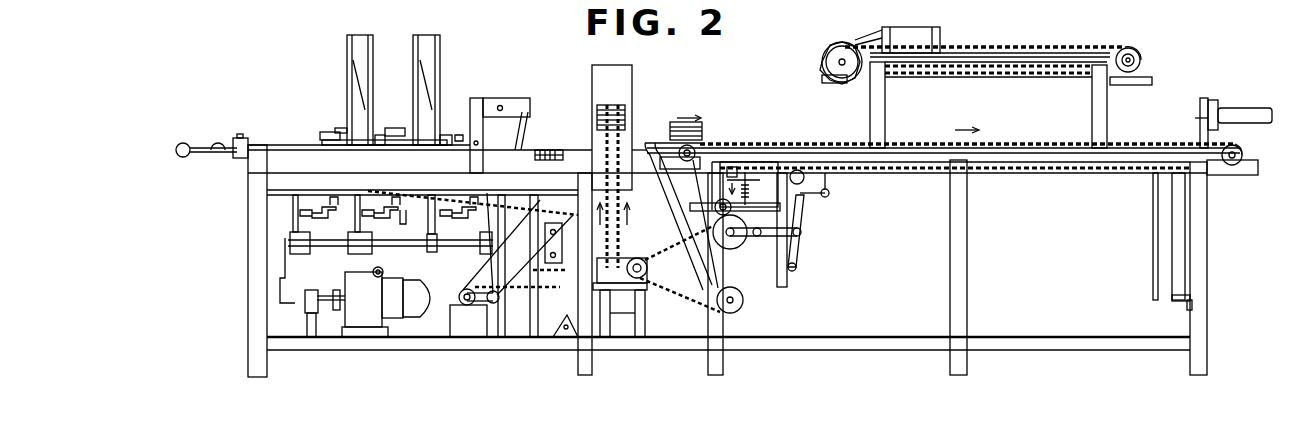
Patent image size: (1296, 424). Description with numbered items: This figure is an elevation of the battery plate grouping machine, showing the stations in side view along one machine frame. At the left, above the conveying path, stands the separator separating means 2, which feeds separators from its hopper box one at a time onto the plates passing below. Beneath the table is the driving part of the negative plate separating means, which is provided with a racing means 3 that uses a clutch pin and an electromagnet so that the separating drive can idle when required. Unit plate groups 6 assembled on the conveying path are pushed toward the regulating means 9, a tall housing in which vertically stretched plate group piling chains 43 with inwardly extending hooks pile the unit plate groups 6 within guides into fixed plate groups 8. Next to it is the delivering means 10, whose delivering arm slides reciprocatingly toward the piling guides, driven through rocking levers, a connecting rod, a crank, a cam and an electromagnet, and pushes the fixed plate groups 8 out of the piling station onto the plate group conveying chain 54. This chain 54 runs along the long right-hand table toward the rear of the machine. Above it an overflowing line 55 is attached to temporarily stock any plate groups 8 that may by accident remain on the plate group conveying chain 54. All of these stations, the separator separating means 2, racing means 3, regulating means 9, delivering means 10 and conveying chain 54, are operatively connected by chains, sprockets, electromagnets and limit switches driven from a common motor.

The separator separating means 2 is at (373, 112).
The racing means 3 is at (308, 227).
The unit plate groups 6 is at (548, 150).
The fixed plate groups 8 is at (625, 110).
The regulating means 9 is at (632, 68).
The delivering means 10 is at (712, 143).
The plate group piling chains 43 is at (620, 205).
The plate group conveying chain 54 is at (912, 143).
The overflowing line 55 is at (1003, 46).